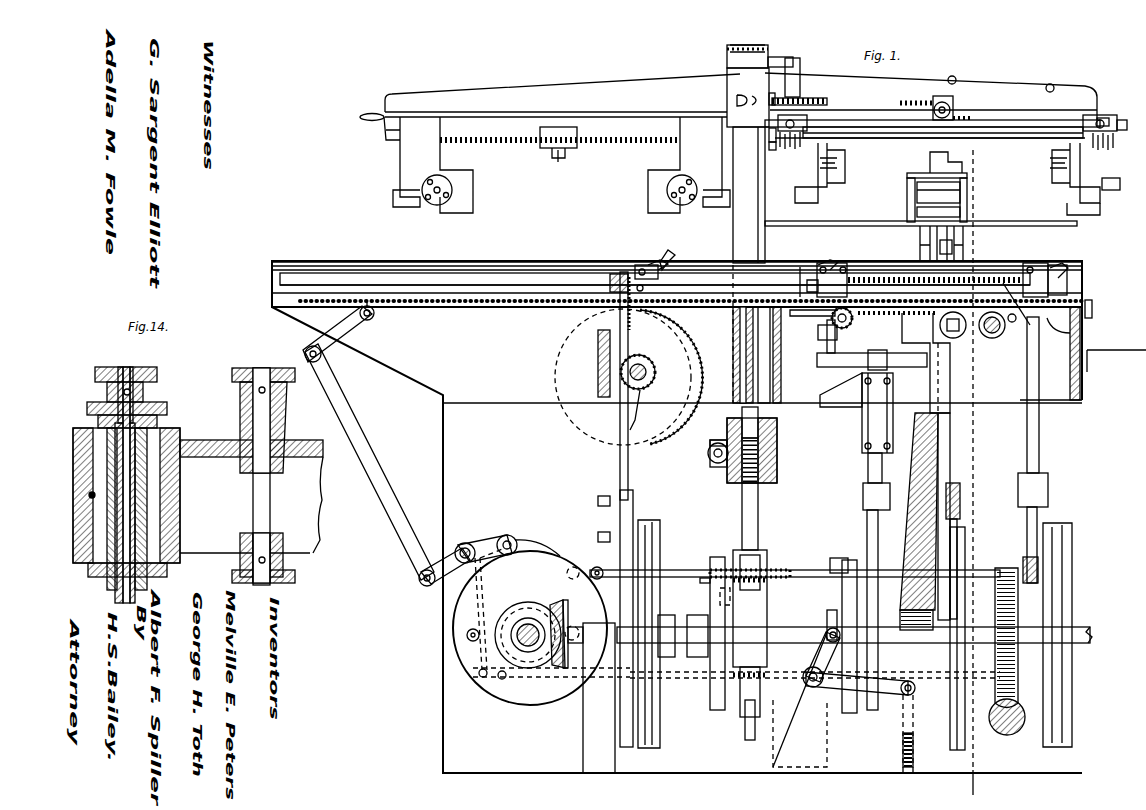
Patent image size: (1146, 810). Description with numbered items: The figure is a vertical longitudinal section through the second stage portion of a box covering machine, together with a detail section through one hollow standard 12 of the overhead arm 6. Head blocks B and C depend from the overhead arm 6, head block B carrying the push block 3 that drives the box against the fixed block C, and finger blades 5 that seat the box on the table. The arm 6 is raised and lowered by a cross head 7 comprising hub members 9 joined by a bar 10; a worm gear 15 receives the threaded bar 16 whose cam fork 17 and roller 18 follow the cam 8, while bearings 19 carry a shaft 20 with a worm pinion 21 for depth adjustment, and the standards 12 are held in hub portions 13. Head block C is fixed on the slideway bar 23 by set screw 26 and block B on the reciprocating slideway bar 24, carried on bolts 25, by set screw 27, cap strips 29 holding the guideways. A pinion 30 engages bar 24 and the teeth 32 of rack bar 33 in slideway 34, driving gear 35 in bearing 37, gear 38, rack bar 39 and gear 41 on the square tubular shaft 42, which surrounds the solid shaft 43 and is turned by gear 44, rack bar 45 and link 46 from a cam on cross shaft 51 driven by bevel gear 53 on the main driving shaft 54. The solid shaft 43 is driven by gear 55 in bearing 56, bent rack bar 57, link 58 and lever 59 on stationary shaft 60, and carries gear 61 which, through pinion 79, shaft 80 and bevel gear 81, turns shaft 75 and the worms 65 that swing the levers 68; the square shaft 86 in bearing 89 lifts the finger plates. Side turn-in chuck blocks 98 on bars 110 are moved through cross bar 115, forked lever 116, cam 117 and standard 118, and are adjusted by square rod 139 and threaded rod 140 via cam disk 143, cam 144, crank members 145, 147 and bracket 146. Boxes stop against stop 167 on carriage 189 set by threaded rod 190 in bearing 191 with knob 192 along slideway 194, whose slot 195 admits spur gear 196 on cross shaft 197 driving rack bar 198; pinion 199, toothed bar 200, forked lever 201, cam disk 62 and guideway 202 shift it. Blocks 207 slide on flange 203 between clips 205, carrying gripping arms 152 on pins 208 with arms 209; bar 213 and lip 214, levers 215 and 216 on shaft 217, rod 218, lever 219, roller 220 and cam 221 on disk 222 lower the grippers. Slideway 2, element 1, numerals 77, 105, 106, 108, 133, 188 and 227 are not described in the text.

In FIG. 1, the machine frame 1 is at (677, 540).
In FIG. 1, the transverse slideway 2 is at (971, 477).
In FIG. 1, the push block 3 is at (1098, 203).
In FIG. 1, the finger blade 5 is at (1057, 635).
In FIG. 1, the overhead arm 6 is at (1000, 93).
In FIG. 1, the cross head 7 is at (777, 428).
In FIG. 1, the cam 8 is at (714, 557).
In FIG. 1, the cylindrical hub member 9 is at (777, 471).
In FIG. 1, the bar 10 is at (777, 440).
In FIG. 1, the tubular vertical hollow standard 12 is at (740, 240).
In FIG. 14, the tubular vertical hollow standard 12 is at (90, 575).
In FIG. 1, the hub portion 13 is at (727, 85).
In FIG. 1, the worm gear 15 is at (727, 470).
In FIG. 1, the circular bar 16 is at (760, 504).
In FIG. 1, the cam fork 17 is at (760, 626).
In FIG. 1, the roller 18 is at (720, 594).
In FIG. 1, the bearing 19 is at (718, 440).
In FIG. 1, the horizontal shaft 20 is at (714, 451).
In FIG. 1, the worm pinion 21 is at (710, 458).
In FIG. 1, the fixed slideway bar 23 is at (872, 133).
In FIG. 1, the slideway bar 24 is at (1014, 125).
In FIG. 1, the bolt 25 is at (952, 78).
In FIG. 1, the set screw 26 is at (805, 125).
In FIG. 1, the set screw 27 is at (1102, 119).
In FIG. 1, the cap strip 29 is at (1122, 120).
In FIG. 1, the pinion 30 is at (951, 112).
In FIG. 1, the teeth 32 is at (915, 108).
In FIG. 1, the rack bar 33 is at (884, 104).
In FIG. 1, the slideway 34 is at (945, 98).
In FIG. 1, the gear 35 is at (800, 100).
In FIG. 1, the vertical bearing 37 is at (812, 96).
In FIG. 1, the gear 38 is at (792, 58).
In FIG. 1, the rack bar 39 is at (768, 46).
In FIG. 1, the gear 41 is at (727, 56).
In FIG. 14, the gear 41 is at (200, 400).
In FIG. 14, the square tubular shaft 42 is at (148, 480).
In FIG. 14, the solid square shaft 43 is at (148, 503).
In FIG. 1, the gear 44 is at (770, 575).
In FIG. 1, the rack bar 45 is at (674, 570).
In FIG. 1, the link 46 is at (575, 567).
In FIG. 1, the cross shaft 51 is at (528, 648).
In FIG. 1, the bevel gear 53 is at (556, 606).
In FIG. 1, the main driving shaft 54 is at (800, 630).
In FIG. 1, the gear 55 is at (757, 693).
In FIG. 1, the bearing 56 is at (760, 662).
In FIG. 1, the rack bar 57 is at (678, 678).
In FIG. 1, the link 58 is at (490, 680).
In FIG. 1, the lever 59 is at (480, 613).
In FIG. 1, the stationary shaft 60 is at (466, 543).
In FIG. 14, the gear wheel 61 is at (104, 367).
In FIG. 1, the cam disk 62 is at (660, 734).
In FIG. 1, the worm pinion 65 is at (782, 150).
In FIG. 1, the depending lever 68 is at (1112, 178).
In FIG. 1, the shaft 75 is at (975, 162).
In FIG. 1, the hanger 77 is at (838, 165).
In FIG. 14, the pinion 79 is at (245, 368).
In FIG. 14, the shaft 80 is at (270, 494).
In FIG. 14, the bevel gear 81 is at (297, 577).
In FIG. 1, the square shaft 86 is at (769, 148).
In FIG. 1, the bearing 89 is at (769, 138).
In FIG. 1, the chuck block 98 is at (960, 194).
In FIG. 1, the shelf 105 is at (907, 178).
In FIG. 1, the block 106 is at (963, 245).
In FIG. 1, the plate 108 is at (920, 235).
In FIG. 1, the bar 110 is at (948, 392).
In FIG. 1, the cross bar 115 is at (963, 490).
In FIG. 1, the forked lever 116 is at (965, 585).
In FIG. 1, the cam 117 is at (948, 712).
In FIG. 1, the standard 118 is at (950, 450).
In FIG. 1, the base 133 is at (962, 212).
In FIG. 1, the square rod 139 is at (955, 340).
In FIG. 1, the threaded rod 140 is at (990, 340).
In FIG. 1, the cam disk 143 is at (850, 713).
In FIG. 1, the cam 144 is at (840, 558).
In FIG. 1, the crank arm member 145 is at (815, 660).
In FIG. 1, the bracket 146 is at (803, 752).
In FIG. 1, the arm 147 is at (885, 695).
In FIG. 1, the gripping arm 152 is at (822, 262).
In FIG. 1, the stop 167 is at (827, 325).
In FIG. 1, the gear 188 is at (853, 322).
In FIG. 1, the carriage 189 is at (820, 338).
In FIG. 1, the hand operating threaded rod 190 is at (1080, 325).
In FIG. 1, the bearing 191 is at (1082, 292).
In FIG. 1, the hand grasping knob 192 is at (1093, 305).
In FIG. 1, the slideway 194 is at (520, 305).
In FIG. 1, the slot 195 is at (630, 310).
In FIG. 1, the spur gear 196 is at (695, 340).
In FIG. 1, the cross shaft 197 is at (656, 376).
In FIG. 1, the toothed rack bar 198 is at (620, 360).
In FIG. 1, the pinion gear 199 is at (648, 416).
In FIG. 1, the toothed bar 200 is at (605, 318).
In FIG. 1, the forked lever 201 is at (622, 700).
In FIG. 1, the guideway 202 is at (595, 350).
In FIG. 1, the flange 203 is at (668, 252).
In FIG. 1, the clip 205 is at (800, 270).
In FIG. 1, the block 207 is at (850, 265).
In FIG. 1, the pin 208 is at (1017, 329).
In FIG. 1, the arm 209 is at (816, 268).
In FIG. 1, the longitudinal bar 213 is at (510, 249).
In FIG. 1, the horizontal lip 214 is at (556, 249).
In FIG. 1, the lever 215 is at (350, 330).
In FIG. 1, the lever 216 is at (1020, 308).
In FIG. 1, the stationary shaft 217 is at (376, 316).
In FIG. 1, the connecting rod 218 is at (368, 437).
In FIG. 1, the lever 219 is at (427, 586).
In FIG. 1, the roller 220 is at (510, 536).
In FIG. 1, the cam 221 is at (540, 555).
In FIG. 1, the disk 222 is at (451, 637).
In FIG. 1, the slot 227 is at (612, 249).
In FIG. 1, the head block B is at (1085, 180).
In FIG. 1, the head block C is at (817, 168).